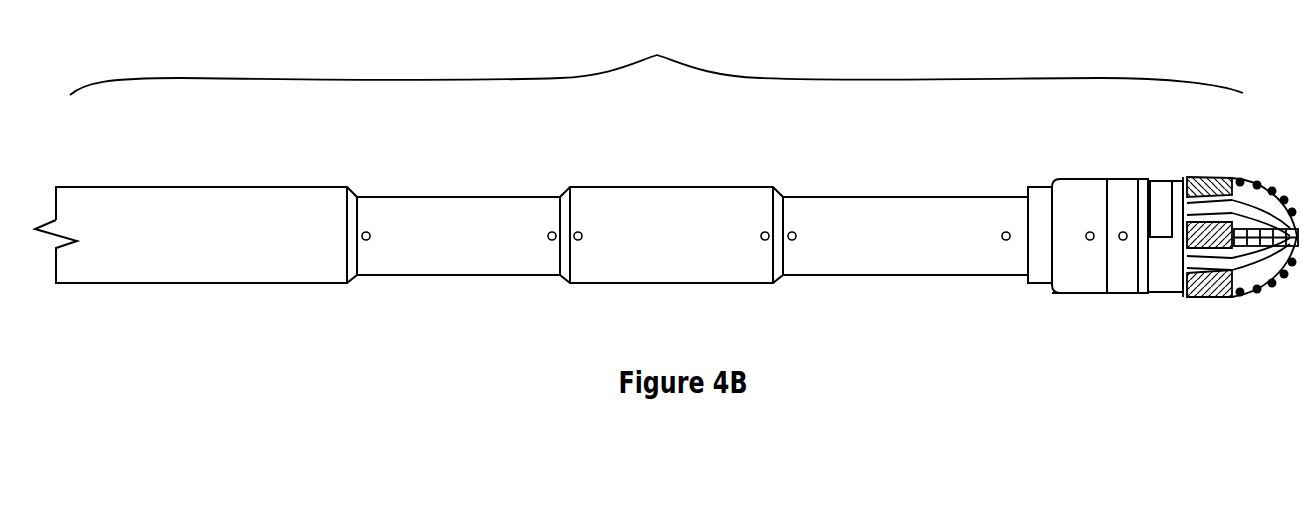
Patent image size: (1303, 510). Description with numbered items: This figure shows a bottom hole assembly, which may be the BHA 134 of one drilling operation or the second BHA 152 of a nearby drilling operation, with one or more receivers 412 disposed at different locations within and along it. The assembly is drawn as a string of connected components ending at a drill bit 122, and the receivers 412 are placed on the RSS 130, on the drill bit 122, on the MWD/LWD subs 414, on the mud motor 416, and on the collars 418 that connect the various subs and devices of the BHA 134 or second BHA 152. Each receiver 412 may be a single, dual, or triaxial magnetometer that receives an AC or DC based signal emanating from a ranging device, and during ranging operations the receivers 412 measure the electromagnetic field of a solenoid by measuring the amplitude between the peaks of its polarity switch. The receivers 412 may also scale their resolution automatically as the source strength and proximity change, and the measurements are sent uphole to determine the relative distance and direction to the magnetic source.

The drill bit 122 is at (1225, 175).
The RSS 130 is at (907, 258).
The BHA 134 is at (656, 63).
The second BHA 152 is at (656, 63).
The receivers 412 is at (366, 241).
The MWD/LWD subs 414 is at (693, 228).
The mud motor 416 is at (455, 228).
The collars 418 is at (1080, 190).